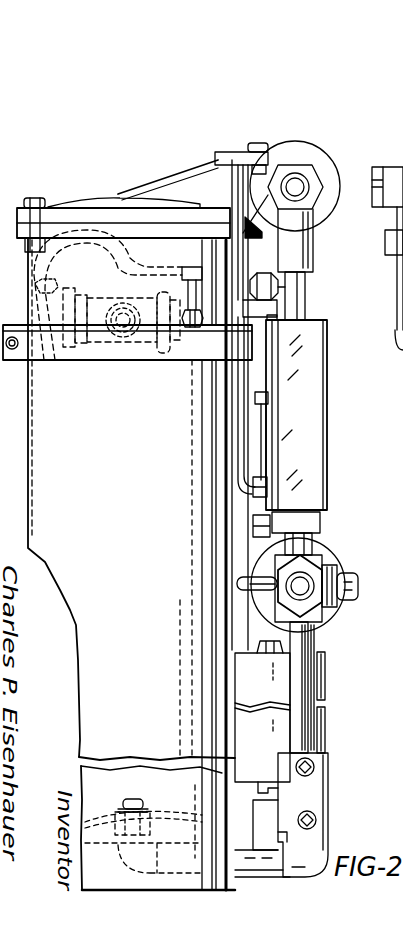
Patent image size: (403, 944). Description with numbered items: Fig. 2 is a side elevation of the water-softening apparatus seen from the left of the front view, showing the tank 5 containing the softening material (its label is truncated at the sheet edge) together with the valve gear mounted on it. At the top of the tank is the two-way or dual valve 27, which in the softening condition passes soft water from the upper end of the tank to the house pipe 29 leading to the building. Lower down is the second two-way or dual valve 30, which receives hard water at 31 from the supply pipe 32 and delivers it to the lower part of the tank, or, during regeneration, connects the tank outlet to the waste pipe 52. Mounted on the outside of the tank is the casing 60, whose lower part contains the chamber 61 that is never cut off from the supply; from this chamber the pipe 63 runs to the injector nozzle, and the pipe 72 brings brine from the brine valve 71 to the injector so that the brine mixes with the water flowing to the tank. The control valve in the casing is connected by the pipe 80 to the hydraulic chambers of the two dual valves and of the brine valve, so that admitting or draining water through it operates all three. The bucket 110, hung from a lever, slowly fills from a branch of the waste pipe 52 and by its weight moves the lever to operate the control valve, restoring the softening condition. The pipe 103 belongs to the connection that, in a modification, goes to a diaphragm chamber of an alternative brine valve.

The tank body 5 is at (52, 442).
The two-way or dual valve 27 is at (303, 238).
The house pipe 29 is at (378, 180).
The two-way or dual valve 30 is at (345, 560).
The hard water inlet 31 is at (312, 598).
The supply pipe 32 is at (326, 590).
The waste pipe 52 is at (255, 593).
The casing 60 is at (328, 410).
The chamber 61 is at (320, 524).
The pipe 63 is at (248, 283).
The brine valve 71 is at (122, 297).
The pipe 72 is at (305, 306).
The pipe 80 is at (166, 250).
The pipe 103 is at (203, 178).
The bucket 110 is at (325, 728).